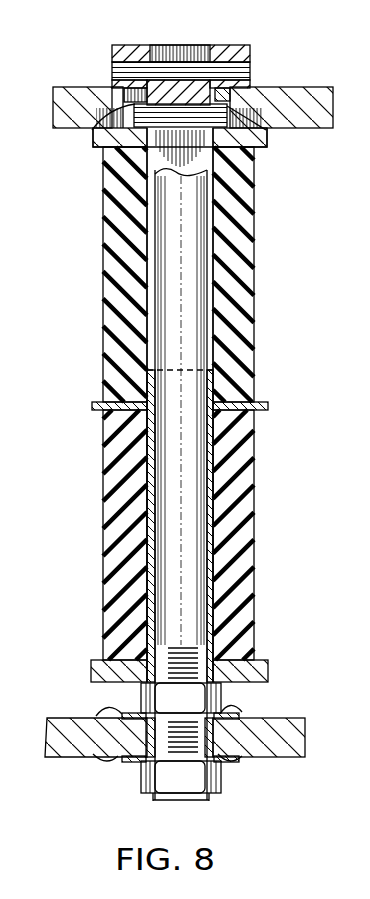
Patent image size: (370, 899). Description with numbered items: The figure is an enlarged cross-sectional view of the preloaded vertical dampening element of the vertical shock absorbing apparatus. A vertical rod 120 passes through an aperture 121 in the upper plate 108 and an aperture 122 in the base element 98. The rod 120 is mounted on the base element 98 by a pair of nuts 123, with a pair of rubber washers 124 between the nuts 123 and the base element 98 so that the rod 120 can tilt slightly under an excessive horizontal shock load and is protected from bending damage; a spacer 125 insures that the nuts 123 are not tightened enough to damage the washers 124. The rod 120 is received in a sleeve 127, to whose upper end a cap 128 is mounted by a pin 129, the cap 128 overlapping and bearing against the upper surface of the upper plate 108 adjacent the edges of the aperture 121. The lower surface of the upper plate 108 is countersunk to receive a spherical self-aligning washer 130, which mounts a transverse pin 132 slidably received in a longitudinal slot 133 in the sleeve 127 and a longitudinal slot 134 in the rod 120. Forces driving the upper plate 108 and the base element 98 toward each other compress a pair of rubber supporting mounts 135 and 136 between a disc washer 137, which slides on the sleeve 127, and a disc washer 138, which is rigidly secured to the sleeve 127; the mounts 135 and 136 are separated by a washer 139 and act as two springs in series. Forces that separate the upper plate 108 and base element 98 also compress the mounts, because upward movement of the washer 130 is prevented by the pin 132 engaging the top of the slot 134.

The base element 98 is at (305, 740).
The upper plate 108 is at (325, 93).
The vertical rod 120 is at (188, 340).
The aperture 121 is at (232, 95).
The aperture 122 is at (155, 752).
The nuts 123 is at (140, 700).
The rubber washers 124 is at (118, 755).
The spacer 125 is at (213, 742).
The sleeve 127 is at (209, 45).
The cap 128 is at (246, 47).
The pin 129 is at (242, 69).
The spherical self-aligning washer 130 is at (114, 110).
The transverse pin 132 is at (138, 112).
The longitudinal slot 133 is at (210, 157).
The longitudinal slot 134 is at (196, 169).
The rubber supporting mount 135 is at (103, 315).
The rubber supporting mount 136 is at (112, 520).
The disc washer 137 is at (93, 134).
The disc washer 138 is at (259, 682).
The washer 139 is at (93, 403).